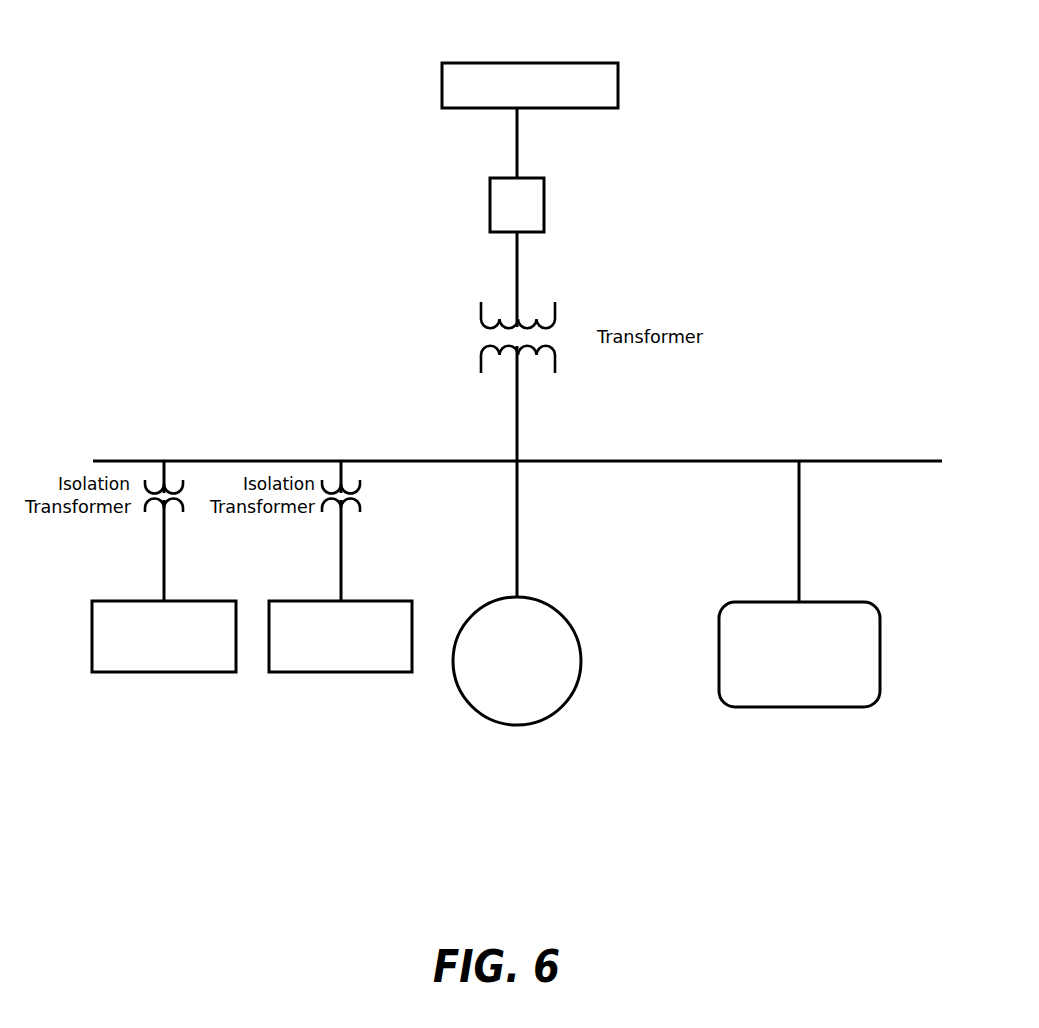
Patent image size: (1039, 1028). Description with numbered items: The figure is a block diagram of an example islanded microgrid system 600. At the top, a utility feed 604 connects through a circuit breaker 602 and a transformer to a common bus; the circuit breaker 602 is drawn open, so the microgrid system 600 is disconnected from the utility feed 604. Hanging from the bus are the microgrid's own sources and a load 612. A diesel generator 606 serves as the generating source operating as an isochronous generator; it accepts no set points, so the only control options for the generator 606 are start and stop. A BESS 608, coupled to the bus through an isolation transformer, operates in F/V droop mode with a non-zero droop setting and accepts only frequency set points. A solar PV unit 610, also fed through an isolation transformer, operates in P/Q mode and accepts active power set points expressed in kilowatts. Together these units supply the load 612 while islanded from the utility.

The islanded microgrid system 600 is at (226, 76).
The circuit breaker 602 is at (490, 205).
The utility feed 604 is at (575, 63).
The diesel generator 606 is at (571, 623).
The BESS 608 is at (128, 600).
The solar PV unit 610 is at (368, 600).
The load 612 is at (827, 601).